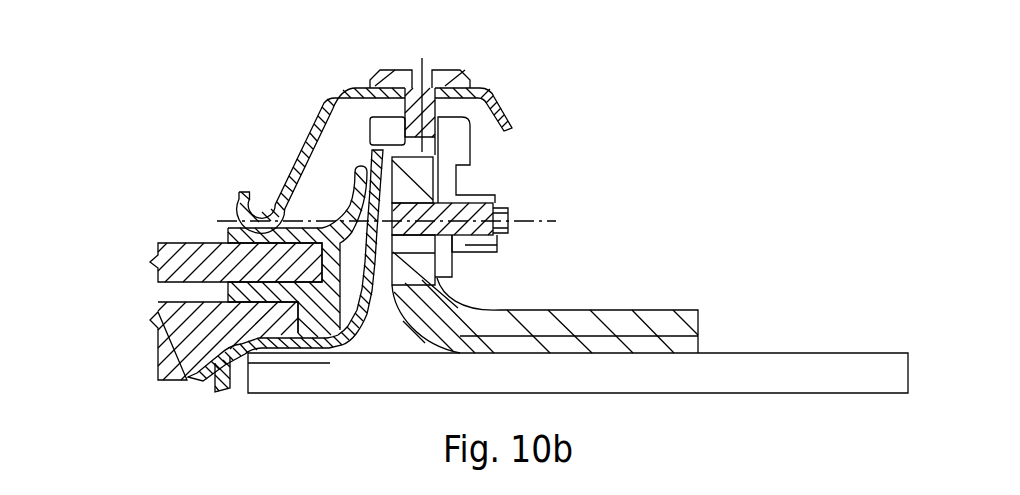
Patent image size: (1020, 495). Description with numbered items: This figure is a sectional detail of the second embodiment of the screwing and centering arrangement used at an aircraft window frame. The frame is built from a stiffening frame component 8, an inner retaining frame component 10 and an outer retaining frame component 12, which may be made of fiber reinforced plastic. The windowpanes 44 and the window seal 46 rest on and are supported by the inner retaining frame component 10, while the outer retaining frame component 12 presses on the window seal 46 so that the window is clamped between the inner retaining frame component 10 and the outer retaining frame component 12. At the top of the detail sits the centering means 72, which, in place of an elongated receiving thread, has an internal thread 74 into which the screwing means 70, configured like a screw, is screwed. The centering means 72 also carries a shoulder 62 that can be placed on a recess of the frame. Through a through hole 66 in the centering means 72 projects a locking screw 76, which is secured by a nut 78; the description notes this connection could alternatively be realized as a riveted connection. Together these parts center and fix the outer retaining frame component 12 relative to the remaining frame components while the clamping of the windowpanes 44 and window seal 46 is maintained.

The stiffening frame component 8 is at (627, 322).
The inner retaining frame component 10 is at (318, 350).
The outer retaining frame component 12 is at (325, 120).
The windowpanes 44 is at (158, 266).
The window seal 46 is at (257, 345).
The shoulder 62 is at (372, 156).
The through hole 66 is at (455, 180).
The screwing means 70 is at (437, 70).
The centering means 72 is at (458, 138).
The internal thread 74 is at (450, 125).
The locking screw 76 is at (471, 237).
The nut 78 is at (493, 201).